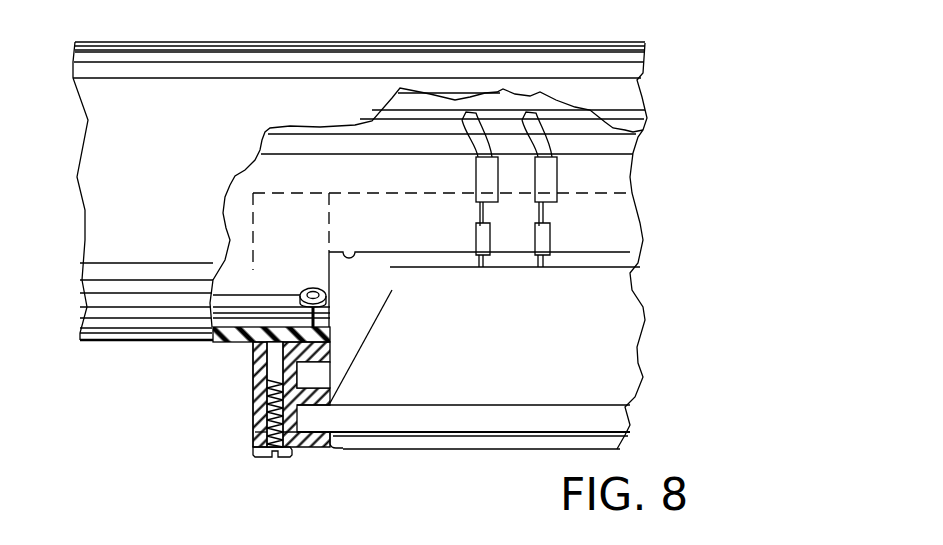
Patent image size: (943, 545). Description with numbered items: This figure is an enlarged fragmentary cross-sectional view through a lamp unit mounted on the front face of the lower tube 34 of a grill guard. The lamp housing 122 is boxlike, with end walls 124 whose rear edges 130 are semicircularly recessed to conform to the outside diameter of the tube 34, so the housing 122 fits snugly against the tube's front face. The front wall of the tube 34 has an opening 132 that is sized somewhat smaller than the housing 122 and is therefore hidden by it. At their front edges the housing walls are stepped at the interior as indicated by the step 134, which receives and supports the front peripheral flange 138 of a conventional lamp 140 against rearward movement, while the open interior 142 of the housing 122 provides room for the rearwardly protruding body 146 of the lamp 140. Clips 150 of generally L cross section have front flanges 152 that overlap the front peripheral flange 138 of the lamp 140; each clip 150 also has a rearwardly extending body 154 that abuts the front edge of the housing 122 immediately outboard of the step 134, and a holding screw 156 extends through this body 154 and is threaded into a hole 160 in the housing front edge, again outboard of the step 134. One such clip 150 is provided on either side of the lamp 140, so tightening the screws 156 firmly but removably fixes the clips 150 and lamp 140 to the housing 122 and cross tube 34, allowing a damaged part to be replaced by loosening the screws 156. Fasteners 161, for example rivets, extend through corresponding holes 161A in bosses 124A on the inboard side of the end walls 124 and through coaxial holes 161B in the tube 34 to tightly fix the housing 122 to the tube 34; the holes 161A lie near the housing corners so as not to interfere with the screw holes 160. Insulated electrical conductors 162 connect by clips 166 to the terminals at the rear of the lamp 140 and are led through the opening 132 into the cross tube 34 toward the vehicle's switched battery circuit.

The lower tube 34 is at (135, 331).
The lamp housing 122 is at (238, 385).
The end walls 124 is at (256, 378).
The bosses 124A is at (330, 335).
The rear edges 130 is at (250, 330).
The opening 132 is at (356, 251).
The step 134 is at (307, 420).
The front peripheral flange 138 is at (338, 440).
The lamp 140 is at (440, 456).
The open interior 142 is at (330, 392).
The rearwardly protruding body 146 is at (515, 339).
The clips 150 is at (262, 430).
The front flanges 152 is at (320, 450).
The rearwardly extending body 154 is at (262, 425).
The holding screw 156 is at (262, 453).
The hole 160 is at (272, 400).
The fasteners 161 is at (308, 290).
The holes 161A is at (348, 372).
The coaxial holes 161B is at (338, 330).
The insulated electrical conductors 162 is at (528, 110).
The clips 166 is at (478, 243).